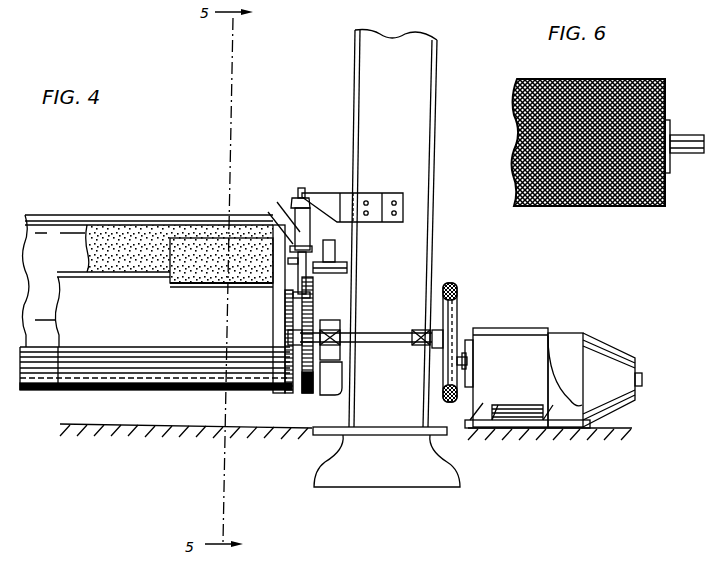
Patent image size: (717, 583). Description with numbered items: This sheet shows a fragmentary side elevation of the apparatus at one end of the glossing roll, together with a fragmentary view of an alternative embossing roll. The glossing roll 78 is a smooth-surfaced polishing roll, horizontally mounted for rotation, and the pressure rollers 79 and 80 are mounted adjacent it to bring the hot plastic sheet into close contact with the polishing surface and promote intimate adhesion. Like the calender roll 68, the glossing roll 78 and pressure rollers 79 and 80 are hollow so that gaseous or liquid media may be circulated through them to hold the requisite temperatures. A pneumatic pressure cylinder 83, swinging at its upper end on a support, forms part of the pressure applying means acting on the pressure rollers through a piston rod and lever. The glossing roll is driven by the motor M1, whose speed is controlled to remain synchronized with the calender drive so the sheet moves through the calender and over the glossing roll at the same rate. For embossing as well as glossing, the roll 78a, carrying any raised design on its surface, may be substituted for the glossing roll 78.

In FIG. 4, the calender roll 68 is at (45, 222).
In FIG. 4, the pressure roller 79 is at (135, 232).
In FIG. 4, the pressure roller 80 is at (200, 243).
In FIG. 4, the pneumatic pressure cylinder 83 is at (313, 238).
In FIG. 4, the glossing roll 78 is at (58, 381).
In FIG. 4, the motor M1 is at (525, 340).
In FIG. 6, the embossing roll 78a is at (607, 206).